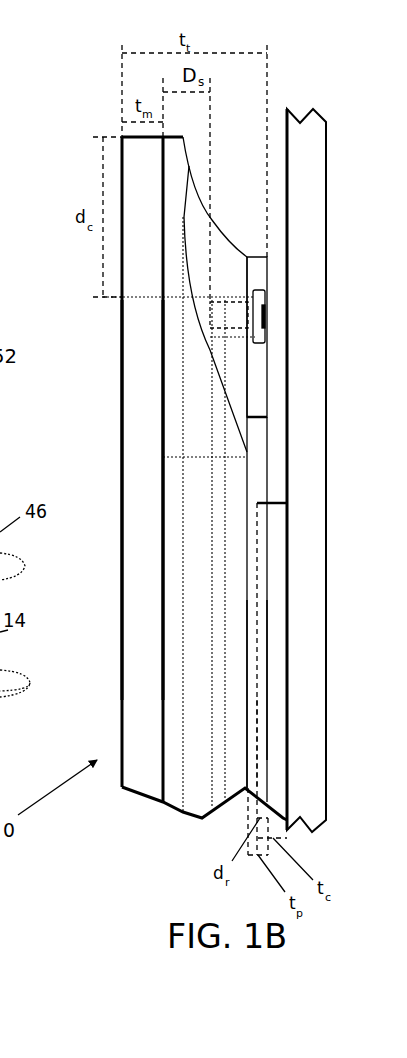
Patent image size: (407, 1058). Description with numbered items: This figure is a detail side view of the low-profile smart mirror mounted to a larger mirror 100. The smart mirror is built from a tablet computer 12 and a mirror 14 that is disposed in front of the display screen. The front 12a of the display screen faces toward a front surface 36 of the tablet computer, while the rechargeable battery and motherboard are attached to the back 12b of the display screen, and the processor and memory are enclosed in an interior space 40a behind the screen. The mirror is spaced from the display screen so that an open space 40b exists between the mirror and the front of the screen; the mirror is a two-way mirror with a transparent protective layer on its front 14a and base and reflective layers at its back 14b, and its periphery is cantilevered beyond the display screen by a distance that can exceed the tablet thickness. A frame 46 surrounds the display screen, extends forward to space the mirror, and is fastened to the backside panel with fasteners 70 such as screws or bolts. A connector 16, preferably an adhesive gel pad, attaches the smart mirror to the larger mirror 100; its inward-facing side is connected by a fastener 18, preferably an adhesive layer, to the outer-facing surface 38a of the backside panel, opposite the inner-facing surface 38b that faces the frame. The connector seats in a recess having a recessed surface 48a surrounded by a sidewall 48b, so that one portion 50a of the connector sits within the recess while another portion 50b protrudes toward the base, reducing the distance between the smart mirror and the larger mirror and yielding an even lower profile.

The tablet computer 12 is at (218, 528).
The front of the display screen 12a is at (210, 430).
The back of the display screen 12b is at (225, 472).
The mirror 14 is at (138, 542).
The front of the mirror 14a is at (123, 720).
The back of the mirror 14b is at (160, 777).
The connector 16 is at (247, 738).
The fastener 18 is at (255, 778).
The front surface of the tablet computer 36 is at (175, 607).
The outer-facing surface of the backside panel 38a is at (267, 465).
The inner-facing surface of the backside panel 38b is at (248, 473).
The interior space 40a is at (240, 692).
The open space 40b is at (190, 542).
The frame 46 is at (213, 245).
The recessed surface 48a is at (258, 545).
The sidewall 48b is at (260, 502).
The portion of the connector within the recess 50a is at (262, 658).
The portion of the connector protruding from the recess 50b is at (272, 723).
The fastener 70 is at (240, 313).
The larger mirror 100 is at (307, 157).